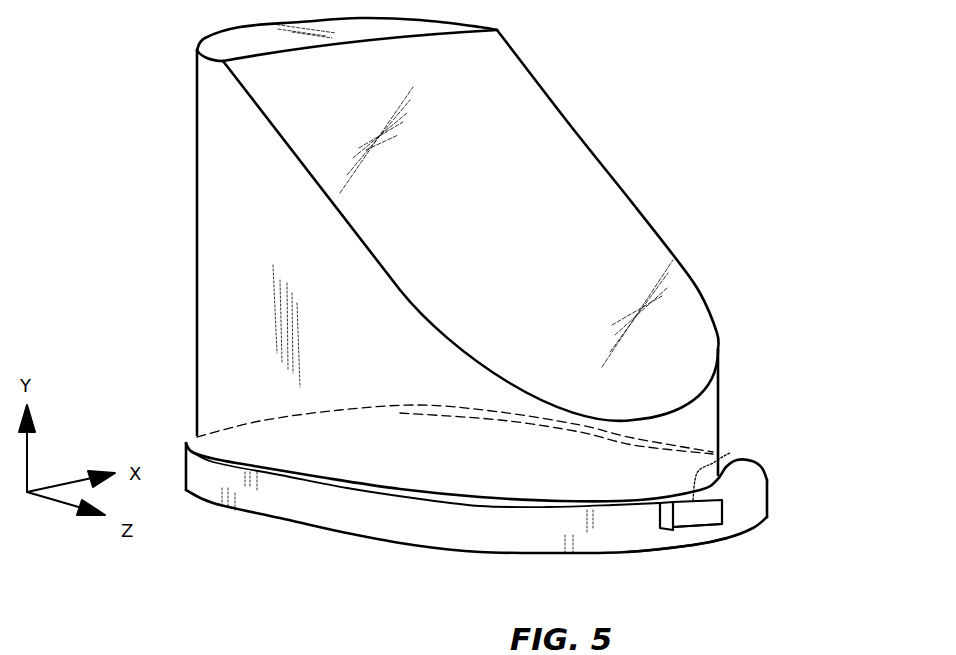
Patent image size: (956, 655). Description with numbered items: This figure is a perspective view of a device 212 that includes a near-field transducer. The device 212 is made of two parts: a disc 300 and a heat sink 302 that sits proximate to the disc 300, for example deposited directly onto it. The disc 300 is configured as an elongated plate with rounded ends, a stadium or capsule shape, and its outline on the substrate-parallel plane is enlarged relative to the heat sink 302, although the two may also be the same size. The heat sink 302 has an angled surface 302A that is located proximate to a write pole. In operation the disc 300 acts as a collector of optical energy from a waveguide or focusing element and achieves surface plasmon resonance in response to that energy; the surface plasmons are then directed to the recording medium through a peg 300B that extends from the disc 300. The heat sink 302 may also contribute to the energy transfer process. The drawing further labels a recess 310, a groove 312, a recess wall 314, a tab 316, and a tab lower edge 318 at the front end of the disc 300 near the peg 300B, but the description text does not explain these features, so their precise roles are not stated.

The device 212 is at (546, 317).
The heat sink 302 is at (458, 246).
The angled surface 302A is at (540, 120).
The disc 300 is at (532, 511).
The peg 300B is at (700, 531).
The recess 310 is at (683, 527).
The groove 312 is at (730, 453).
The recess wall 314 is at (657, 520).
The tab 316 is at (724, 514).
The tab lower edge 318 is at (710, 530).